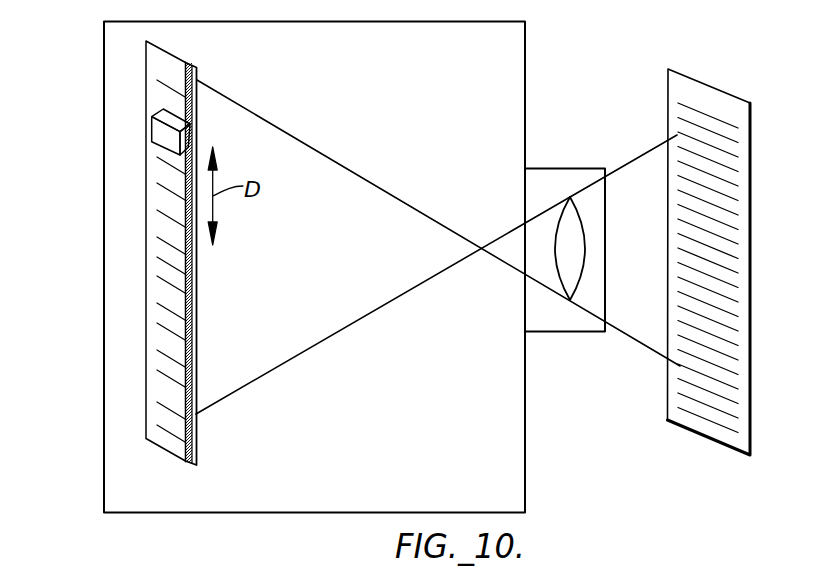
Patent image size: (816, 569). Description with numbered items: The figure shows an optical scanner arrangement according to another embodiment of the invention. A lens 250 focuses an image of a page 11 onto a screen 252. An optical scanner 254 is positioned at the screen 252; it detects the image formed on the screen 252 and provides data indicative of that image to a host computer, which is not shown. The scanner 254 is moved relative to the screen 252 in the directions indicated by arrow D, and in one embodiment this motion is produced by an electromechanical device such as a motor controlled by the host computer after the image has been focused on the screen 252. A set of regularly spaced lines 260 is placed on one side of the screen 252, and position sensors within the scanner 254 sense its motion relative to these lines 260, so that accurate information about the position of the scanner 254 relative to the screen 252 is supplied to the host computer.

The screen 252 is at (181, 56).
The optical scanner 254 is at (167, 137).
The regularly spaced lines 260 is at (193, 260).
The lens 250 is at (580, 232).
The page 11 is at (701, 95).